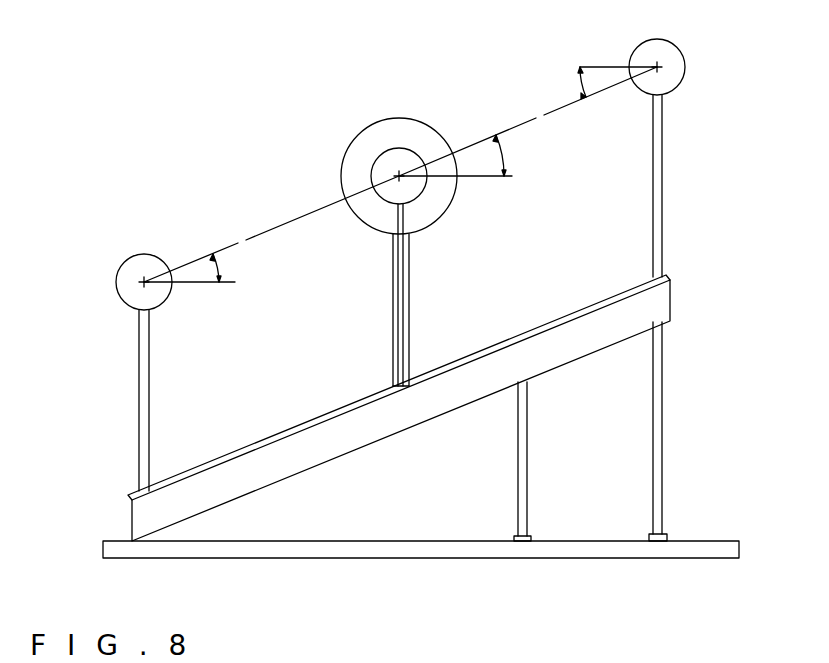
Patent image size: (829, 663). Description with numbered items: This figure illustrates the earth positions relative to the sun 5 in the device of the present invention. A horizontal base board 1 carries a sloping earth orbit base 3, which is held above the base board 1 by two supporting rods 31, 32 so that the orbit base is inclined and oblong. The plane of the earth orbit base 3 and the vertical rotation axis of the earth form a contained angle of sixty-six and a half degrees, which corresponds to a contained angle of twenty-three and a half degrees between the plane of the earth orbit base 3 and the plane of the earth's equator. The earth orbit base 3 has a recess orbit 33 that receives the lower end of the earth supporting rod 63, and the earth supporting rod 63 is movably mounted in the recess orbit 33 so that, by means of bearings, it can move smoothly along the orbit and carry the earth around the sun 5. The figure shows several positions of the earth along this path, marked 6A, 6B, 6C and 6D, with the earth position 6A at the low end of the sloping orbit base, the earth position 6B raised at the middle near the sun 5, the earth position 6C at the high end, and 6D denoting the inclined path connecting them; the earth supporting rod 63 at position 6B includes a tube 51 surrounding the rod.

The base board 1 is at (427, 558).
The earth orbit base 3 is at (672, 279).
The sun 5 is at (358, 143).
The earth position 6A is at (184, 271).
The earth position 6B is at (449, 150).
The earth position 6C is at (625, 57).
The earth position 6D is at (400, 174).
The supporting rod 31 is at (663, 429).
The supporting rod 32 is at (524, 474).
The recess orbit 33 is at (541, 327).
The tube 51 is at (410, 315).
The earth supporting rod 63 is at (403, 271).